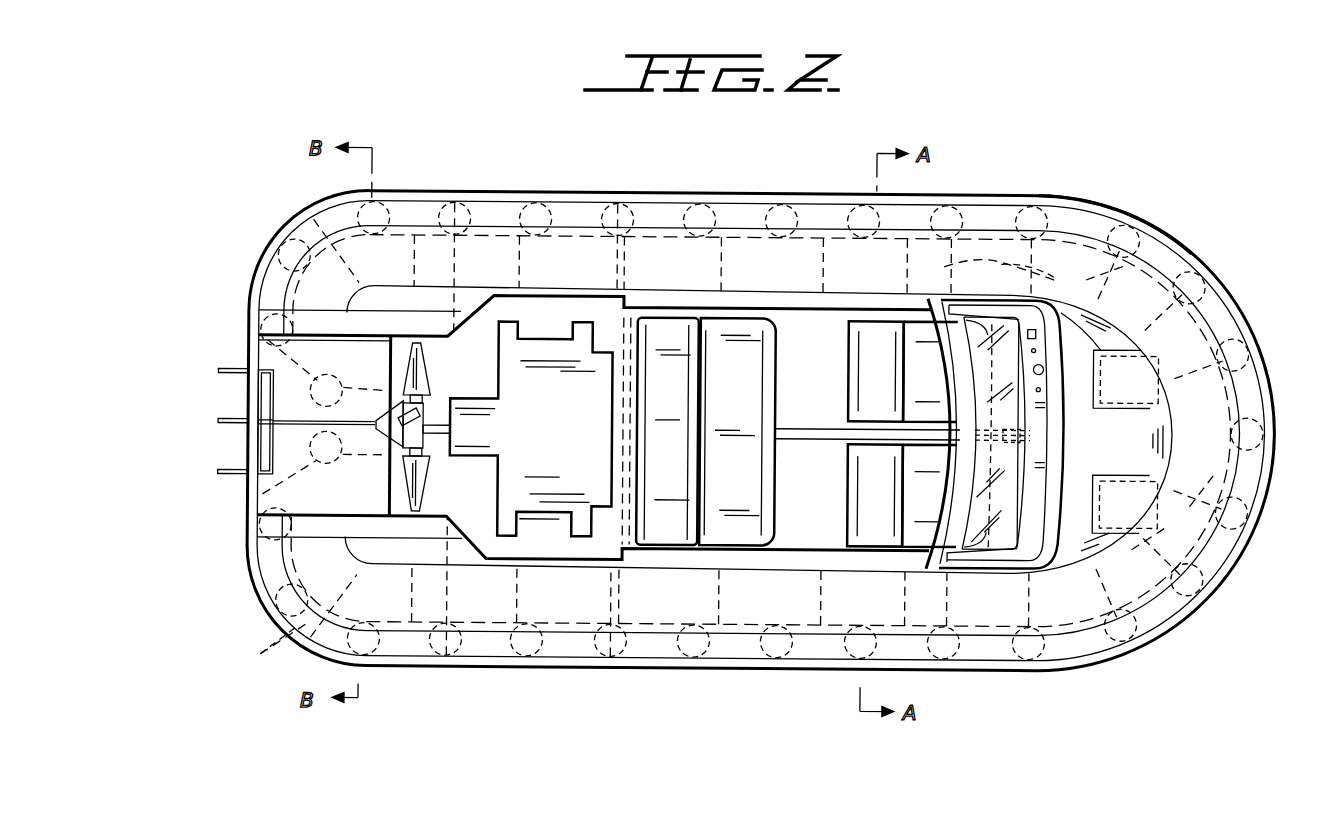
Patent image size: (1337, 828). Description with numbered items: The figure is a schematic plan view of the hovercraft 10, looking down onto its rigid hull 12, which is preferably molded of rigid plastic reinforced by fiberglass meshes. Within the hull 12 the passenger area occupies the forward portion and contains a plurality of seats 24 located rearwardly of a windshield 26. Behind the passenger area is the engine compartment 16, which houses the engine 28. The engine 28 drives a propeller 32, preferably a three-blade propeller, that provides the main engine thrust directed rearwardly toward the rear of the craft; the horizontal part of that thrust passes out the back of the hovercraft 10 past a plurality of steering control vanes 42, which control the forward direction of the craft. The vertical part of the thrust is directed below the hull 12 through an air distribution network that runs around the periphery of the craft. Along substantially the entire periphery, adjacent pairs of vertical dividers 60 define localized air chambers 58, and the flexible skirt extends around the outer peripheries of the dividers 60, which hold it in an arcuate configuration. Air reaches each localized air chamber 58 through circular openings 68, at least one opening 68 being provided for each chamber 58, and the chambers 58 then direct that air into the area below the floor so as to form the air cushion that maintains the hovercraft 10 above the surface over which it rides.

The hovercraft 10 is at (1093, 188).
The rigid hull 12 is at (1268, 493).
The engine compartment 16 is at (553, 540).
The seats 24 is at (860, 373).
The windshield 26 is at (1013, 478).
The engine 28 is at (560, 444).
The propeller 32 is at (427, 360).
The steering control vanes 42 is at (238, 470).
The localized air chambers 58 is at (397, 250).
The vertical dividers 60 is at (710, 468).
The circular openings 68 is at (785, 208).